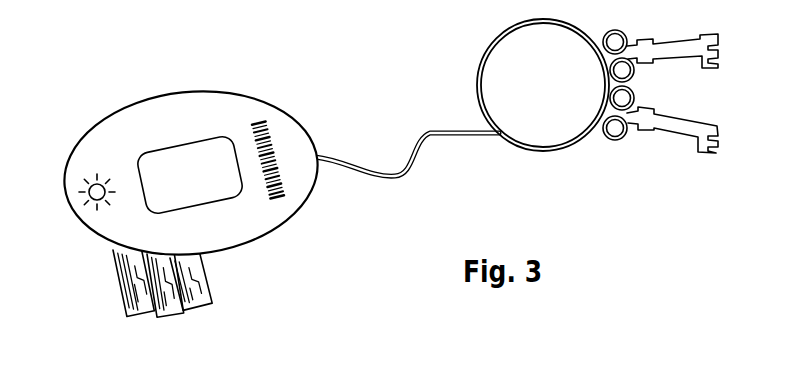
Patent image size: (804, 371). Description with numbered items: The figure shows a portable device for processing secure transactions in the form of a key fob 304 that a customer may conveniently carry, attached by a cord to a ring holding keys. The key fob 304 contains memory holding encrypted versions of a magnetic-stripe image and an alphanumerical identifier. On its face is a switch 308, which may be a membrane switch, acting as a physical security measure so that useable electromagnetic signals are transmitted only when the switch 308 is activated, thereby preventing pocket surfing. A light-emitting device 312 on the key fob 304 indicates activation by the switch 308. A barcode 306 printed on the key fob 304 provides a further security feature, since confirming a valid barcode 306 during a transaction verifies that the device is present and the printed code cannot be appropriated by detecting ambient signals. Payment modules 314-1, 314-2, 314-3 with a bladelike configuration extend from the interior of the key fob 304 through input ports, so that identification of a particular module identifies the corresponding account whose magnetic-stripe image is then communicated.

The key fob 304 is at (175, 92).
The barcode 306 is at (270, 128).
The switch 308 is at (215, 207).
The light-emitting device 312 is at (88, 171).
The payment module 314-1 is at (127, 313).
The payment module 314-2 is at (167, 318).
The payment module 314-3 is at (203, 307).